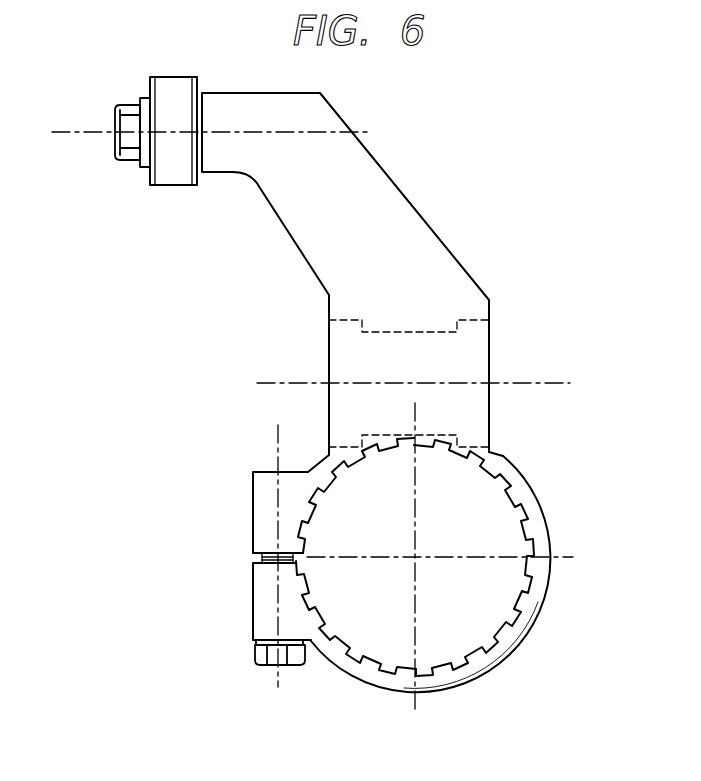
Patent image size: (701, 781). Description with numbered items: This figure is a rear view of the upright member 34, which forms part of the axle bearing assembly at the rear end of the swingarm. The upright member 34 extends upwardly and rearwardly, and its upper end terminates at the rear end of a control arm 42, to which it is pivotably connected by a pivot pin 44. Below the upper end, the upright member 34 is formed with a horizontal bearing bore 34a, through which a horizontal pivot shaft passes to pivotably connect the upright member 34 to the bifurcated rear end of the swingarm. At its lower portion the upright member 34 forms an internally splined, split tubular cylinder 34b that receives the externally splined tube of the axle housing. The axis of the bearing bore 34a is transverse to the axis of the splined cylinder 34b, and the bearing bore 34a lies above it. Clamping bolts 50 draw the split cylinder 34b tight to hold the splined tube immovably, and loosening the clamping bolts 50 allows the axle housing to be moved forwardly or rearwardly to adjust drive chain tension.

The upright member 34 is at (385, 210).
The horizontal bearing bore 34a is at (477, 383).
The internally splined split tubular cylinder 34b is at (520, 608).
The control arm 42 is at (172, 97).
The pivot pin 44 is at (125, 127).
The clamping bolts 50 is at (262, 663).